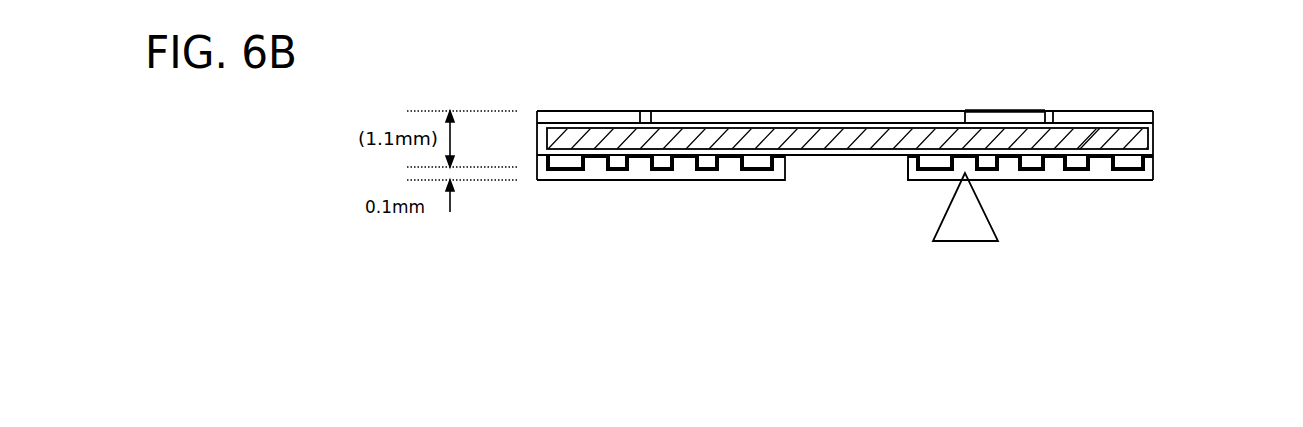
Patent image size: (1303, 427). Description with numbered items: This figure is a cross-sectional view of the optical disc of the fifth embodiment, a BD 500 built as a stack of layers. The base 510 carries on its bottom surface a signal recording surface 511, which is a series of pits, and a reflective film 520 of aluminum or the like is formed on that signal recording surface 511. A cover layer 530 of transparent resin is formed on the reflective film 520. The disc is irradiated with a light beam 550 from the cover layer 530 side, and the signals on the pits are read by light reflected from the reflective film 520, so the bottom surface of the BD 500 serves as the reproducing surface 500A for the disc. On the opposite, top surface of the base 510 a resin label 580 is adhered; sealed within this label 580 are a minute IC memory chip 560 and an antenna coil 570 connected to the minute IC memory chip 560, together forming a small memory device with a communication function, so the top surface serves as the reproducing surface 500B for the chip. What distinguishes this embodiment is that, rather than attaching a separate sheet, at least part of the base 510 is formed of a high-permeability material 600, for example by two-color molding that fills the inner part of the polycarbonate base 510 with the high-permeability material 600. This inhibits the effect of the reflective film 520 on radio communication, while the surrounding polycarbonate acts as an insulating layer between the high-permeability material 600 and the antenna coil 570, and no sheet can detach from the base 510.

The BD 500 is at (860, 110).
The reproducing surface for the disc 500A is at (917, 182).
The reproducing surface for the chip 500B is at (592, 110).
The base 510 is at (1150, 131).
The signal recording surface 511 is at (760, 171).
The reflective film 520 is at (1123, 163).
The cover layer 530 is at (1150, 180).
The light beam 550 is at (975, 218).
The minute IC memory chip 560 is at (999, 110).
The antenna coil 570 is at (646, 110).
The label 580 is at (1127, 113).
The high-permeability material 600 is at (1091, 137).